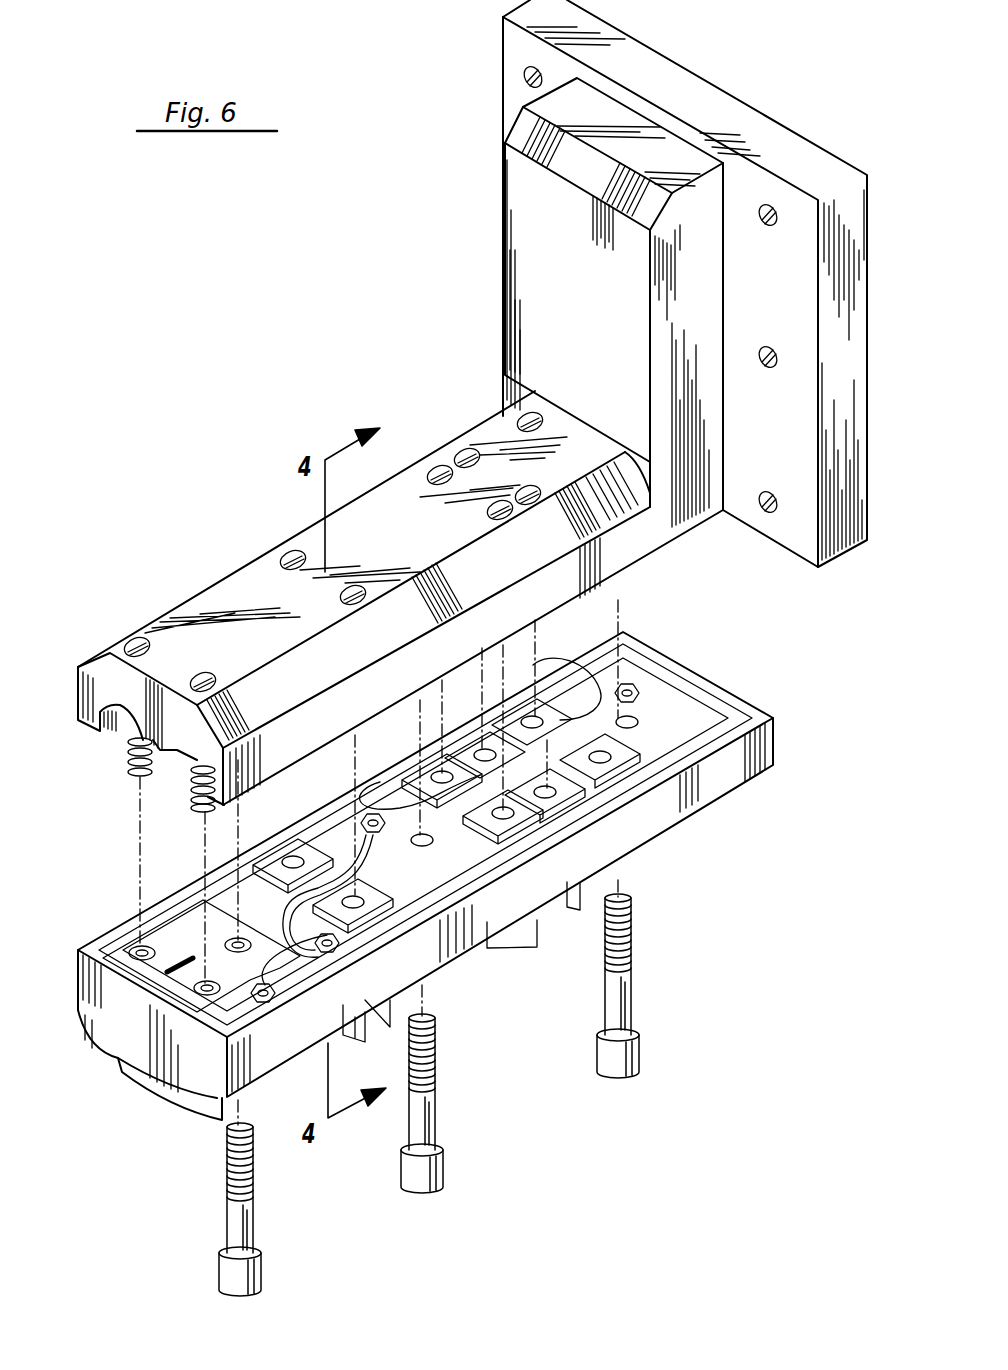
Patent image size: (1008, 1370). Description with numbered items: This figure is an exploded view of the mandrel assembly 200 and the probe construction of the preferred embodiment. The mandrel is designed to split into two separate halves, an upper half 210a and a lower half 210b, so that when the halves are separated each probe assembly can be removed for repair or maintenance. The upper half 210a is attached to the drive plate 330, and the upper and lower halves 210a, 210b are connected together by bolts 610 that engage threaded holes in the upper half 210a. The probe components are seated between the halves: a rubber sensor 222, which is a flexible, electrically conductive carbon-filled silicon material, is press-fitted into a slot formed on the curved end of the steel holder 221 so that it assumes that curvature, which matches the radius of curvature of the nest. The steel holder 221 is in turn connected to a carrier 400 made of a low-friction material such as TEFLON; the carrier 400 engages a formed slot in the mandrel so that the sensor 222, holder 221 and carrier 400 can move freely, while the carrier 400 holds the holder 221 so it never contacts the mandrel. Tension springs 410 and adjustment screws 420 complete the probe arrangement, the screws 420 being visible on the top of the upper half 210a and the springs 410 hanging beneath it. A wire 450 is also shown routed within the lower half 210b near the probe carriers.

The clamp assembly 200 is at (458, 228).
The drive plate 330 is at (685, 100).
The upper half 210a is at (223, 597).
The lower half 210b is at (647, 815).
The adjustment screws 420 is at (467, 450).
The tension springs 410 is at (128, 766).
The wire lead 450 is at (533, 660).
The carrier 400 is at (130, 948).
The steel holder 221 is at (177, 1102).
The sensor 222 is at (193, 1122).
The bolts 610 is at (255, 1235).